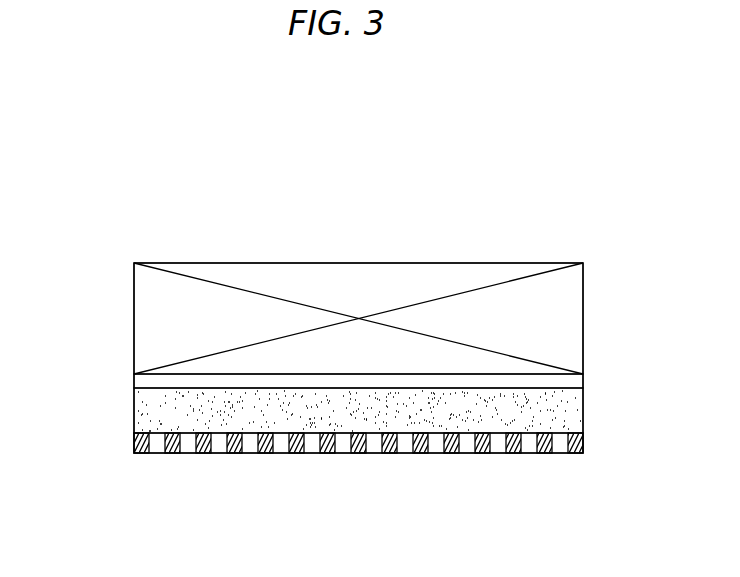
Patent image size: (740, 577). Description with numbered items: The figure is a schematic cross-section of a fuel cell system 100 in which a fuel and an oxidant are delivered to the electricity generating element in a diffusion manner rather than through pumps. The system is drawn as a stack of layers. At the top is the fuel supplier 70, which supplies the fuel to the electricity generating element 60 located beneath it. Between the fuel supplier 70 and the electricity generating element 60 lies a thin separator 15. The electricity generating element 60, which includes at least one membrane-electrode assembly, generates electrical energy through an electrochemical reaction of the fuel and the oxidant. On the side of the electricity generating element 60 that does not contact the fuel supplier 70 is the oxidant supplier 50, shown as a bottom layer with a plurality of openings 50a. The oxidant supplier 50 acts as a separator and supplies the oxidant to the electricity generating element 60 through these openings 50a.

The fuel cell system 100 is at (380, 198).
The fuel supplier 70 is at (120, 327).
The separator 15 is at (572, 382).
The electricity generating element 60 is at (120, 413).
The oxidant supplier 50 is at (317, 483).
The openings 50a is at (467, 445).